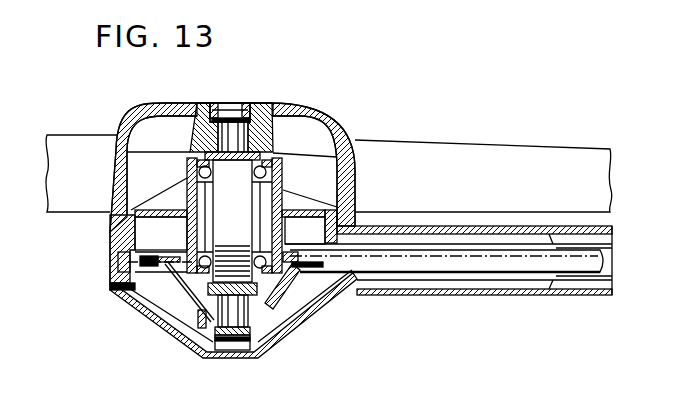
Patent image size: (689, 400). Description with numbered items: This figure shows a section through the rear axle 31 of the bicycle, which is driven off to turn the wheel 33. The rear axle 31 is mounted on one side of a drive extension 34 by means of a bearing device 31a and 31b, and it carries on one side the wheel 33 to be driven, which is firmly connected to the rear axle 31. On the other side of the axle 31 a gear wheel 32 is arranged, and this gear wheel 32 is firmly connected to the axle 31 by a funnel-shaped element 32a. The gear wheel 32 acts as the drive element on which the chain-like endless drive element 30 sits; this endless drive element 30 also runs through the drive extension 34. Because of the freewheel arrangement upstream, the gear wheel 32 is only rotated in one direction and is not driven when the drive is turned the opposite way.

The endless drive element 30 is at (432, 273).
The rear axle 31 is at (240, 217).
The bearing device 31a is at (253, 157).
The bearing device 31b is at (284, 185).
The gear wheel 32 is at (320, 268).
The funnel-shaped element 32a is at (188, 298).
The rear wheel 33 is at (397, 148).
The drive extension 34 is at (532, 296).